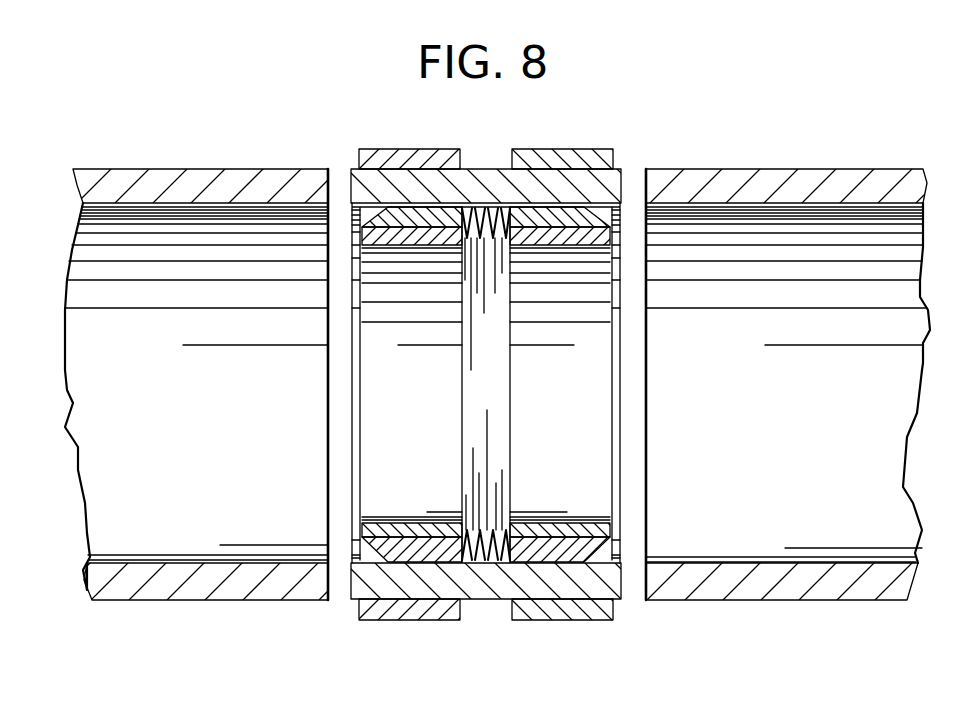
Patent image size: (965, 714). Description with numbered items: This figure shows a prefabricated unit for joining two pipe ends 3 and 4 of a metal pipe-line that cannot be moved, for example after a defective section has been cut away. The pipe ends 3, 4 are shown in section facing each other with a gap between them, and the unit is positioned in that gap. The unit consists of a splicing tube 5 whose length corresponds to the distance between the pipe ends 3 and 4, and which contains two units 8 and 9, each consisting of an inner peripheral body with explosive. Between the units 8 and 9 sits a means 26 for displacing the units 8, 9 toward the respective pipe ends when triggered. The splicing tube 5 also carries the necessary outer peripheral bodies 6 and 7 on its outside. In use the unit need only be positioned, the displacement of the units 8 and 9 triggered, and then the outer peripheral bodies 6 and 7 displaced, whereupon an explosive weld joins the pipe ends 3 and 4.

The pipe end 3 is at (760, 178).
The pipe end 4 is at (195, 178).
The splicing tube 5 is at (478, 177).
The outer peripheral body 6 is at (407, 158).
The outer peripheral body 7 is at (567, 160).
The unit consisting of an inner peripheral body with explosive 8 is at (573, 487).
The unit consisting of an inner peripheral body with explosive 9 is at (405, 497).
The means for displacing the units 26 is at (493, 538).